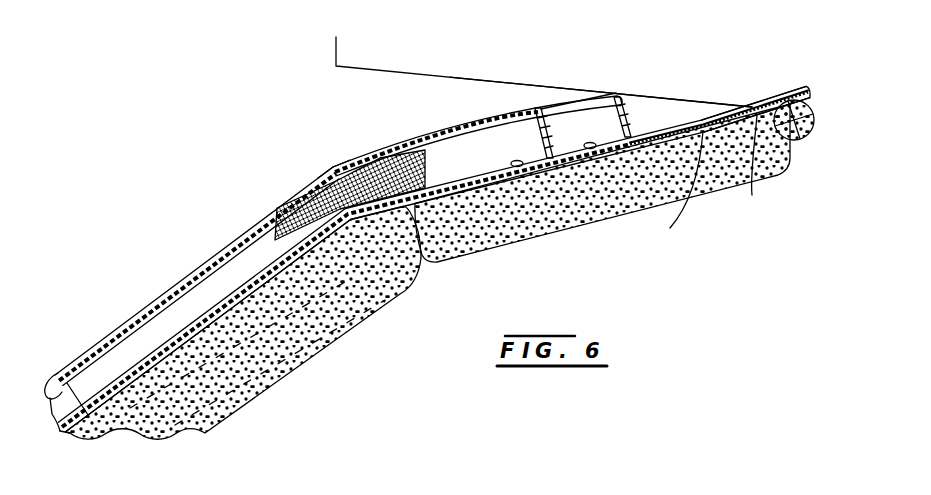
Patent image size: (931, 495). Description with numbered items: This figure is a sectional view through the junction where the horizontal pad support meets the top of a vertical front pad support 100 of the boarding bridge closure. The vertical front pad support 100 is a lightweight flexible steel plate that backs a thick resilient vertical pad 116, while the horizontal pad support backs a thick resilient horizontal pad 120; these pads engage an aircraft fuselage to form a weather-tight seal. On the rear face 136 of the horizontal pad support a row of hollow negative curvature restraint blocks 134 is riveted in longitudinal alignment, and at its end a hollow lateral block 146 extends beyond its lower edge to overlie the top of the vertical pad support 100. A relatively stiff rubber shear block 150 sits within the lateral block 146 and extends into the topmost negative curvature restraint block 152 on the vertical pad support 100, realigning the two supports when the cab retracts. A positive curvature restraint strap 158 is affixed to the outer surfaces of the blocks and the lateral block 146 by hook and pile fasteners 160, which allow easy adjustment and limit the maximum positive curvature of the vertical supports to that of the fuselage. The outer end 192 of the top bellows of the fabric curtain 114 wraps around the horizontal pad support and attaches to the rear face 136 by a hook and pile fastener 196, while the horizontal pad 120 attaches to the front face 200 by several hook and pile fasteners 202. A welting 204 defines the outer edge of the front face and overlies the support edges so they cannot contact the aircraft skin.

The vertical front pad support 100 is at (68, 436).
The fabric curtain 114 is at (362, 66).
The vertical pad 116 is at (357, 329).
The horizontal pad 120 is at (463, 255).
The negative curvature restraint block 134 is at (628, 103).
The rear face of horizontal pad support 136 is at (680, 126).
The lateral block 146 is at (490, 121).
The shear block 150 is at (311, 184).
The topmost negative curvature restraint block 152 is at (276, 208).
The positive curvature restraint strap 158 is at (76, 364).
The hook and pile fastener 160 is at (133, 320).
The outer end of the top bellows of the fabric curtain 192 is at (540, 86).
The hook and pile fastener 196 is at (793, 88).
The front face of horizontal pad support 200 is at (670, 228).
The hook and pile fastener 202 is at (752, 195).
The welting 204 is at (813, 106).